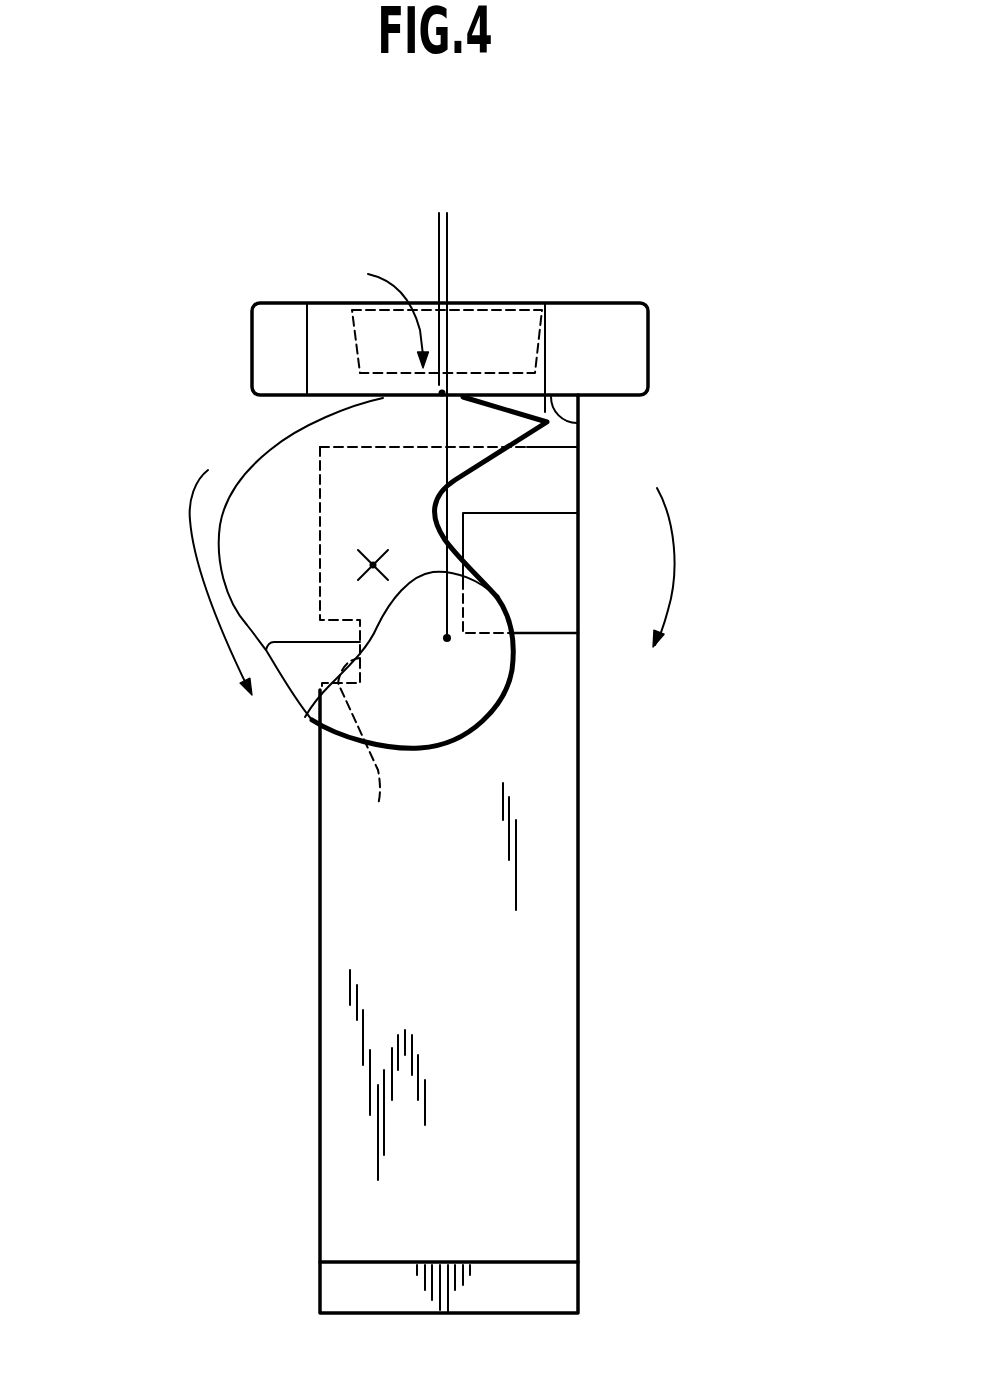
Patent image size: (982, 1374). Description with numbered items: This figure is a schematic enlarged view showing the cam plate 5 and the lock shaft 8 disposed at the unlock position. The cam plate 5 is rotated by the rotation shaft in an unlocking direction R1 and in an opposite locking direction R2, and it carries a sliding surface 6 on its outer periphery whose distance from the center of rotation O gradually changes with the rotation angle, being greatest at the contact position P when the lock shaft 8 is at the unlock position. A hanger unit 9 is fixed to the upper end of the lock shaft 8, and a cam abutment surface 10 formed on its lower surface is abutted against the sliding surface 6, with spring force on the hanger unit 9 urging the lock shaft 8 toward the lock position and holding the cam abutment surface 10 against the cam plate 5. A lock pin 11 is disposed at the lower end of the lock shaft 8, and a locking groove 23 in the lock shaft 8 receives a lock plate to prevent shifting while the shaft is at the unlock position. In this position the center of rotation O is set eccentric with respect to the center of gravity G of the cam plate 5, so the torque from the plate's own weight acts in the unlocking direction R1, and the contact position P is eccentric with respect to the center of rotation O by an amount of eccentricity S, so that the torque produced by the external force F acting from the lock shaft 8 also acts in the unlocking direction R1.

The cam plate 5 is at (306, 722).
The sliding surface 6 is at (260, 458).
The lock shaft 8 is at (557, 1020).
The hanger unit 9 is at (625, 343).
The cam abutment surface 10 is at (558, 415).
The lock pin 11 is at (553, 1288).
The locking groove 23 is at (371, 755).
The center of rotation O is at (450, 641).
The contact position P is at (442, 393).
The center of gravity G is at (373, 570).
The amount of eccentricity S is at (503, 240).
The external force F is at (384, 309).
The unlocking direction R1 is at (188, 513).
The locking direction R2 is at (678, 557).